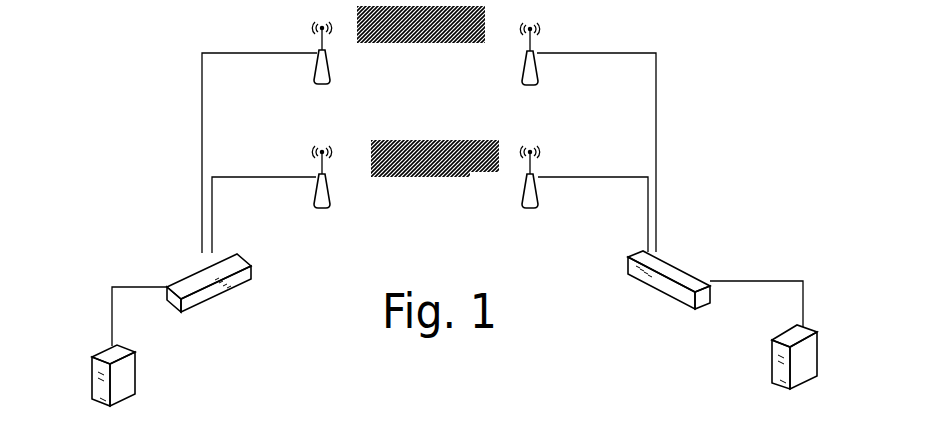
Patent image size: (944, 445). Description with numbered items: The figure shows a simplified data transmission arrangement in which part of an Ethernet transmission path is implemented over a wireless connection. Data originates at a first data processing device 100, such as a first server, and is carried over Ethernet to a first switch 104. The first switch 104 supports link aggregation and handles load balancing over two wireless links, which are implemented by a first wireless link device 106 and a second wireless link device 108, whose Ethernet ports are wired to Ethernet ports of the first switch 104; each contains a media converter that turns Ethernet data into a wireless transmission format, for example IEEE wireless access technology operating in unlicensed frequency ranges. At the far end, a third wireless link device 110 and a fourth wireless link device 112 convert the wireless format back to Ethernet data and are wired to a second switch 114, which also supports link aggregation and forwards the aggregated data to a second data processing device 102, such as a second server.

The first data processing device 100 is at (85, 375).
The second data processing device 102 is at (832, 357).
The first switch 104 is at (211, 296).
The first wireless link device 106 is at (333, 191).
The second wireless link device 108 is at (316, 67).
The third wireless link device 110 is at (528, 197).
The fourth wireless link device 112 is at (541, 68).
The second switch 114 is at (669, 296).